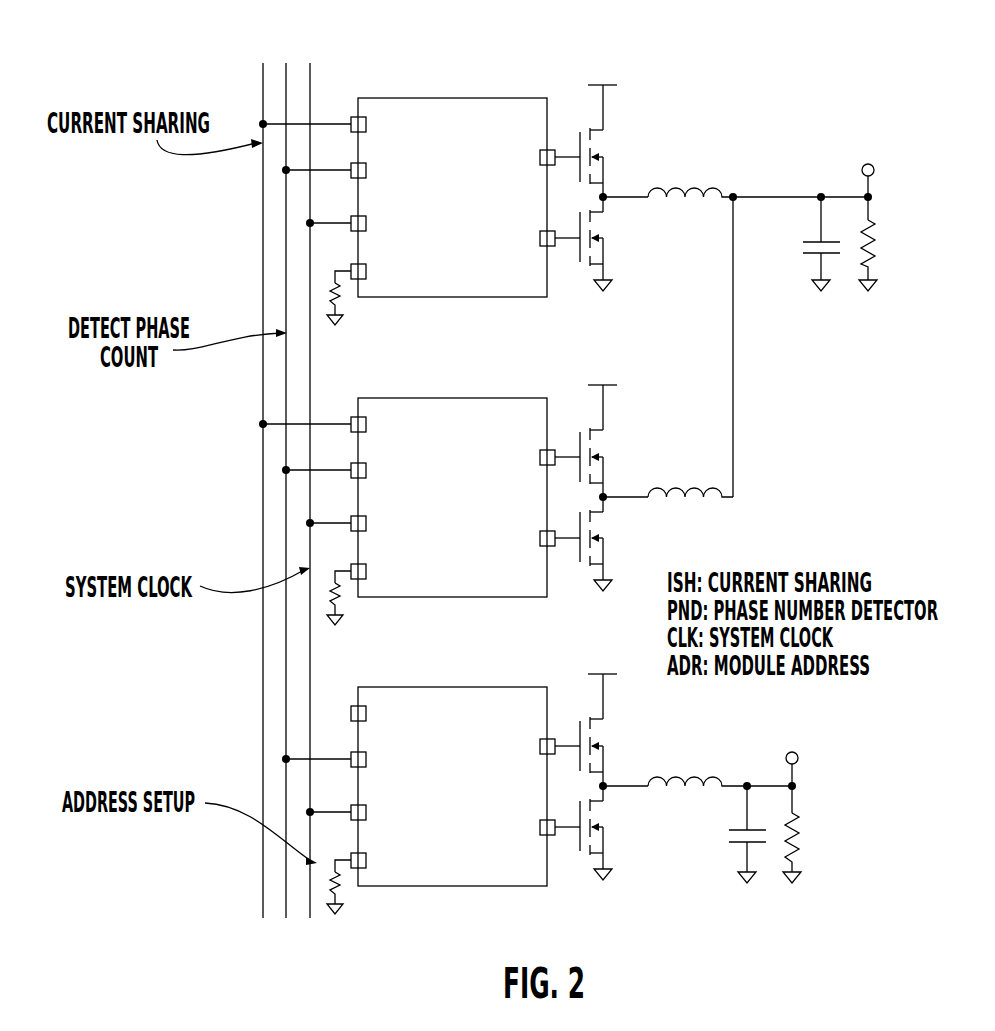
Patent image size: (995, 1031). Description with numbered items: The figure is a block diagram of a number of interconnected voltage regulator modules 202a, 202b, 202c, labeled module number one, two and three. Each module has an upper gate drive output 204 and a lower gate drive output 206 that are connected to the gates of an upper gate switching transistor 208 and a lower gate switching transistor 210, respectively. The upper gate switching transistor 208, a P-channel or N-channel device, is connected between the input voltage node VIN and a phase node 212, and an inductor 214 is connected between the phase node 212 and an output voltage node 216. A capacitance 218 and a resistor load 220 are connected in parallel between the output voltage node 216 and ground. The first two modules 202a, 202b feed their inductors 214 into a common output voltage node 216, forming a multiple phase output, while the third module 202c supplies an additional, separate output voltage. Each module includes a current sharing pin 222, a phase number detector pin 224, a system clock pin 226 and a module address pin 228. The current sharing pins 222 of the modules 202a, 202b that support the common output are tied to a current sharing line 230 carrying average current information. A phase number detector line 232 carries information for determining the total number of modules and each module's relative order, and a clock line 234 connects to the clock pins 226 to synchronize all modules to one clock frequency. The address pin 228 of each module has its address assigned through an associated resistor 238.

The voltage regulator module 202a is at (453, 298).
The voltage regulator module 202b is at (452, 503).
The voltage regulator module 202c is at (452, 792).
The upper gate drive output 204 is at (547, 149).
The lower gate drive output 206 is at (550, 247).
The upper gate switching transistor 208 is at (600, 150).
The lower gate switching transistor 210 is at (600, 225).
The phase node 212 is at (601, 197).
The inductor 214 is at (697, 187).
The output voltage node 216 is at (737, 195).
The capacitance 218 is at (810, 263).
The resistor load 220 is at (878, 258).
The current sharing pin (ISH) 222 is at (370, 133).
The phase number detector pin (PND) 224 is at (367, 178).
The system clock pin (CLK) 226 is at (368, 231).
The module address pin (ADR) 228 is at (368, 279).
The current sharing line 230 is at (262, 220).
The phase number detector line 232 is at (286, 287).
The clock line 234 is at (310, 392).
The resistor 238 is at (342, 300).